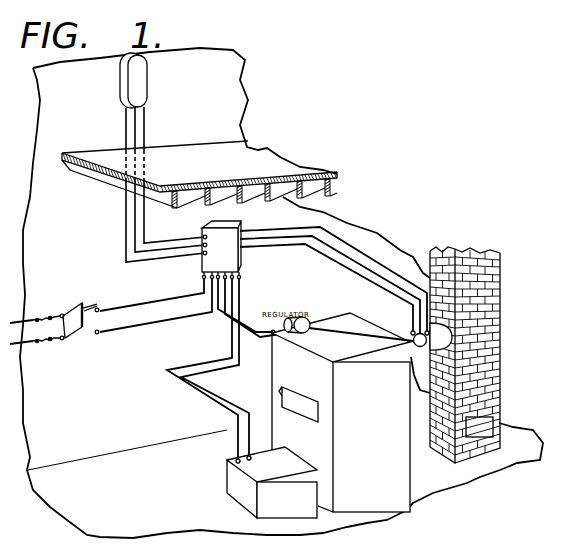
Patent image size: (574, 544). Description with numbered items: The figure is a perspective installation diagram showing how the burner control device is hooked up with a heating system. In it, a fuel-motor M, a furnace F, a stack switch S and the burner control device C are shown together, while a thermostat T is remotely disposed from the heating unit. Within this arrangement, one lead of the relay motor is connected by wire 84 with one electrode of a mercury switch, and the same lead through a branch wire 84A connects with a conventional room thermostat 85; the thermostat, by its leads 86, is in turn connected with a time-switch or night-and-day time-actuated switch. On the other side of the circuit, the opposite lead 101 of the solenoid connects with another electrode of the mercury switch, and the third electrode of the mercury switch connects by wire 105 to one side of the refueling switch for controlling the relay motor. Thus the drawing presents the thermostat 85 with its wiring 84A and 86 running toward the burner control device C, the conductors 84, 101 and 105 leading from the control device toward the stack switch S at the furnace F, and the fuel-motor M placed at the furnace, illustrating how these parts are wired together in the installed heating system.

The room thermostat 85 is at (146, 79).
The branch wire 84A is at (126, 212).
The thermostat leads 86 is at (128, 229).
The solenoid lead 101 is at (372, 262).
The wire 84 is at (345, 279).
The wire 105 is at (378, 283).
The thermostat T is at (134, 80).
The burner control device C is at (221, 250).
The furnace F is at (341, 412).
The fuel-motor M is at (272, 482).
The stack switch S is at (420, 347).